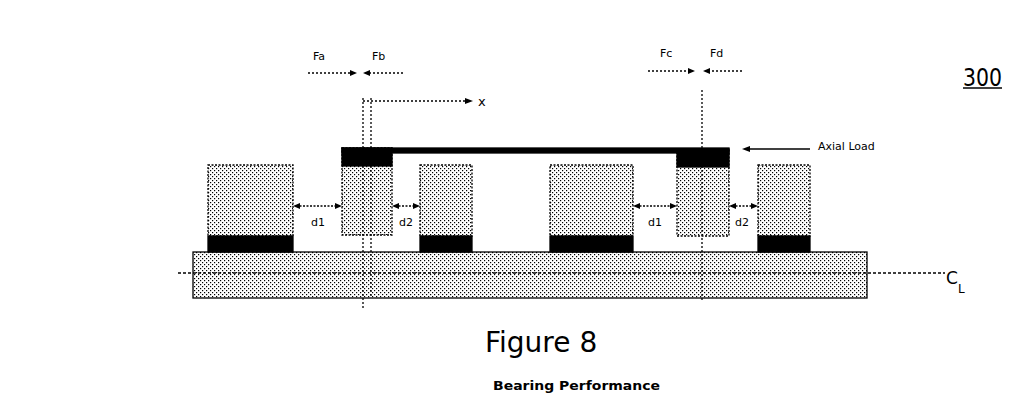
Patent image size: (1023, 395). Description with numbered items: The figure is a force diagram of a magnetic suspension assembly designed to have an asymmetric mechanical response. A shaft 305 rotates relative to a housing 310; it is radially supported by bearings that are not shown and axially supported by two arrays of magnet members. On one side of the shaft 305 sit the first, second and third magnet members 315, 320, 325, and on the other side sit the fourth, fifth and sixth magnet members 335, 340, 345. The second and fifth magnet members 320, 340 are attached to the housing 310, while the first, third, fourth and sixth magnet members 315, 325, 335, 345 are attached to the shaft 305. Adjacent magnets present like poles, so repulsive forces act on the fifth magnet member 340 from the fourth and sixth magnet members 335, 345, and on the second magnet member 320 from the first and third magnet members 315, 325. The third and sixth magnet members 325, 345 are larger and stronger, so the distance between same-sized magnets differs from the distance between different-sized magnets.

The shaft 305 is at (810, 302).
The housing 310 is at (537, 148).
The first magnet member 315 is at (788, 179).
The second magnet member 320 is at (725, 177).
The third magnet member 325 is at (602, 180).
The fourth magnet member 335 is at (450, 185).
The fifth magnet member 340 is at (348, 177).
The sixth magnet member 345 is at (240, 178).